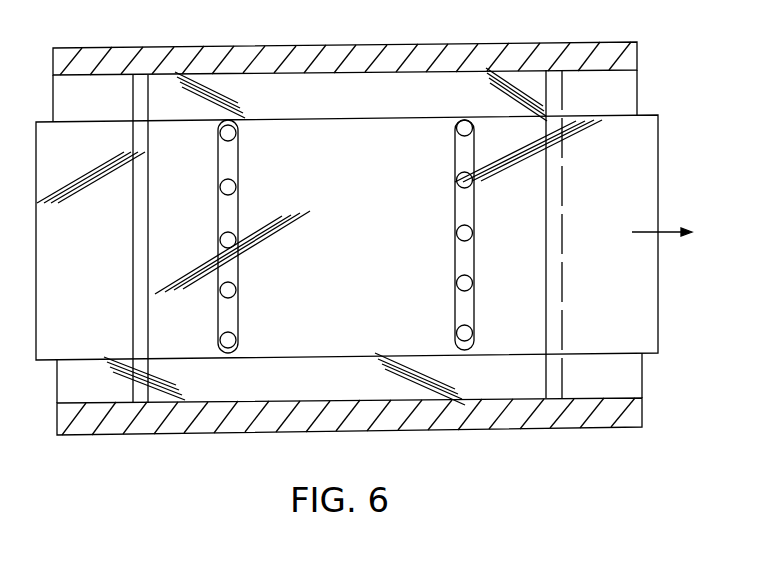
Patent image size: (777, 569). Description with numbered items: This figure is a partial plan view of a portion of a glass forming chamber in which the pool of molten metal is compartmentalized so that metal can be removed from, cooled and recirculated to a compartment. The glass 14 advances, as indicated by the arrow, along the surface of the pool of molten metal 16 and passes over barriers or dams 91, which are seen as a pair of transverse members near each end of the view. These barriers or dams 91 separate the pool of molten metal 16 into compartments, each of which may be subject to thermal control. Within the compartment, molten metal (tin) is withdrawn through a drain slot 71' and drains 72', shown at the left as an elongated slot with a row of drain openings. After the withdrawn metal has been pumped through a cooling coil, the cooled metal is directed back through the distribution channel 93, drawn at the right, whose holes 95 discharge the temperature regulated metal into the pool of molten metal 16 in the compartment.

The glass 14 is at (358, 266).
The pool of molten metal 16 is at (328, 394).
The barriers or dams 91 is at (133, 95).
The drain slot 71' is at (262, 236).
The drains 72' is at (260, 236).
The distribution channel 93 is at (455, 160).
The holes 95 is at (470, 236).